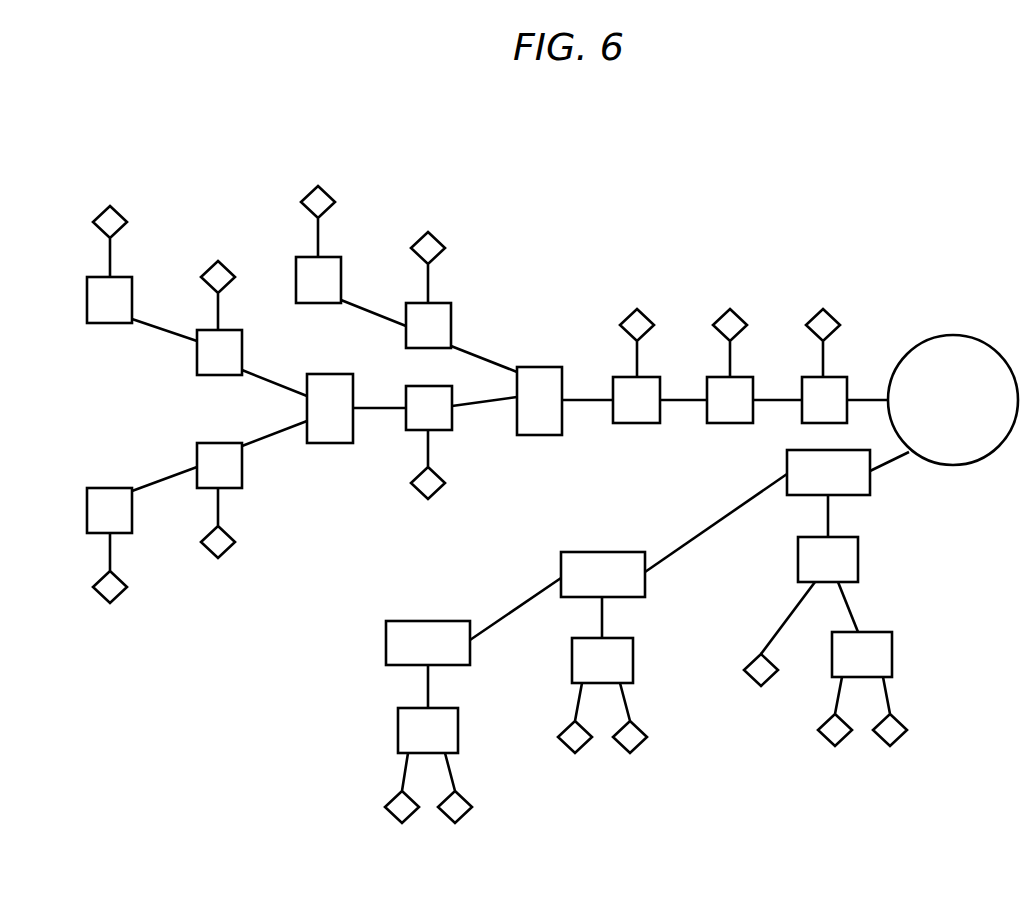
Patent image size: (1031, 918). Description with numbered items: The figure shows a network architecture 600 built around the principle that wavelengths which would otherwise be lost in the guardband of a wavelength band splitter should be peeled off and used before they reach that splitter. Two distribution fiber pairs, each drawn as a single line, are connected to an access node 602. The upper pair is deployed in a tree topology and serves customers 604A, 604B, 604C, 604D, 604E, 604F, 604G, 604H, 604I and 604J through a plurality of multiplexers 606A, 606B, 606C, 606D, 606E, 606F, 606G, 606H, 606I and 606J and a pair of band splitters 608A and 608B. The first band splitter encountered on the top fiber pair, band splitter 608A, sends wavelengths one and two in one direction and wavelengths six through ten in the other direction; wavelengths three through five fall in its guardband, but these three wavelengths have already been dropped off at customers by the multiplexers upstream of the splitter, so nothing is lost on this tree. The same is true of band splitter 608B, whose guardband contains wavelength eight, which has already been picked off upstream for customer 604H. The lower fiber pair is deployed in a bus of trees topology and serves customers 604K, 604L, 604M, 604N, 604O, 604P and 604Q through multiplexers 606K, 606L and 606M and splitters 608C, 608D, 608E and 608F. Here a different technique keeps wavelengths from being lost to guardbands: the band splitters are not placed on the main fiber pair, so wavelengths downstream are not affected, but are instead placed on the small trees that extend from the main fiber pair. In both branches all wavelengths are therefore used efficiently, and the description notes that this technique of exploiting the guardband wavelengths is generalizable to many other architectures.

The network architecture 600 is at (843, 151).
The access node 602 is at (955, 335).
The customer 604A is at (823, 308).
The customer 604B is at (730, 308).
The customer 604C is at (637, 308).
The customer 604D is at (428, 231).
The customer 604E is at (318, 185).
The customer 604F is at (218, 260).
The customer 604G is at (110, 205).
The customer 604H is at (428, 500).
The customer 604I is at (218, 559).
The customer 604J is at (110, 604).
The customer 604K is at (890, 747).
The customer 604L is at (835, 747).
The customer 604M is at (760, 687).
The customer 604N is at (630, 754).
The customer 604O is at (575, 754).
The customer 604P is at (455, 824).
The customer 604Q is at (402, 824).
The multiplexer 606A is at (839, 377).
The multiplexer 606B is at (745, 377).
The multiplexer 606C is at (650, 377).
The multiplexer 606D is at (450, 303).
The multiplexer 606E is at (340, 257).
The multiplexer 606F is at (197, 362).
The multiplexer 606G is at (87, 298).
The multiplexer 606H is at (444, 431).
The multiplexer 606I is at (197, 447).
The multiplexer 606J is at (87, 509).
The multiplexer 606K is at (870, 487).
The multiplexer 606L is at (601, 552).
The multiplexer 606M is at (386, 640).
The band splitter 608A is at (538, 367).
The band splitter 608B is at (330, 443).
The splitter 608C is at (858, 559).
The splitter 608D is at (892, 654).
The splitter 608E is at (633, 663).
The splitter 608F is at (398, 731).